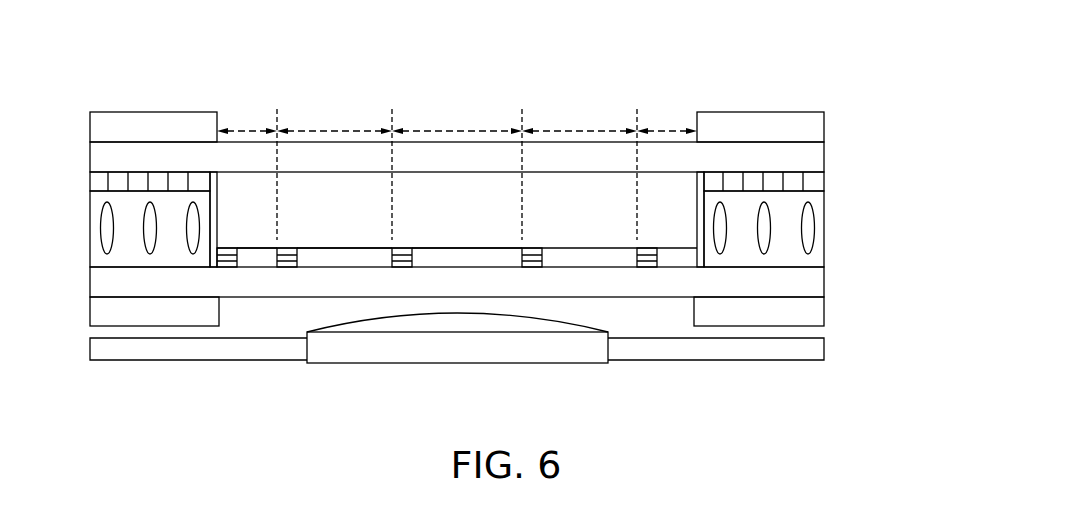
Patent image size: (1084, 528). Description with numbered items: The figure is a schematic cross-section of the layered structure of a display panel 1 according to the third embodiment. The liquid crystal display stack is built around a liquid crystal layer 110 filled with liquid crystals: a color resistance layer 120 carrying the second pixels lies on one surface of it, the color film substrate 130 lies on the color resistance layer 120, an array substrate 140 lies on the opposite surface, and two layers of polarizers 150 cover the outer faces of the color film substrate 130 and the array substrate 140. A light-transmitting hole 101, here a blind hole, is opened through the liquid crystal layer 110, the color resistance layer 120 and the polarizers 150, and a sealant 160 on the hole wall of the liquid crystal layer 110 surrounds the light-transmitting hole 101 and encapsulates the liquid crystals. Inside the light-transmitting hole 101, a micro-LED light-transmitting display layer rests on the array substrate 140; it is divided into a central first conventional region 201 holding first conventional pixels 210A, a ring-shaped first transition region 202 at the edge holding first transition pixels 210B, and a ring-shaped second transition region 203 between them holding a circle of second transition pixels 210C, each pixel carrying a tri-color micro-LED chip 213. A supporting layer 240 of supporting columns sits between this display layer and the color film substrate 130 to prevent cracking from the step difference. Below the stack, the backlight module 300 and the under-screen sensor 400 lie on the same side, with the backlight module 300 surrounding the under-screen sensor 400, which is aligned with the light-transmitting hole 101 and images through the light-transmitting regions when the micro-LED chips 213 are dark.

The display panel 1 is at (424, 57).
The light-transmitting hole 101 is at (622, 100).
The liquid crystal layer 110 is at (824, 232).
The color resistance layer 120 is at (824, 183).
The color film substrate 130 is at (824, 158).
The array substrate 140 is at (824, 283).
The polarizers 150 is at (824, 128).
The sealant 160 is at (215, 183).
The first conventional region 201 is at (457, 118).
The first transition region 202 is at (457, 171).
The second transition region 203 is at (457, 171).
The first conventional pixel 210A is at (459, 258).
The first transition pixel 210B is at (246, 258).
The second transition pixel 210C is at (350, 258).
The micro-LED chip 213 is at (533, 268).
The supporting layer 240 is at (585, 215).
The backlight module 300 is at (824, 350).
The under-screen sensor 400 is at (457, 363).